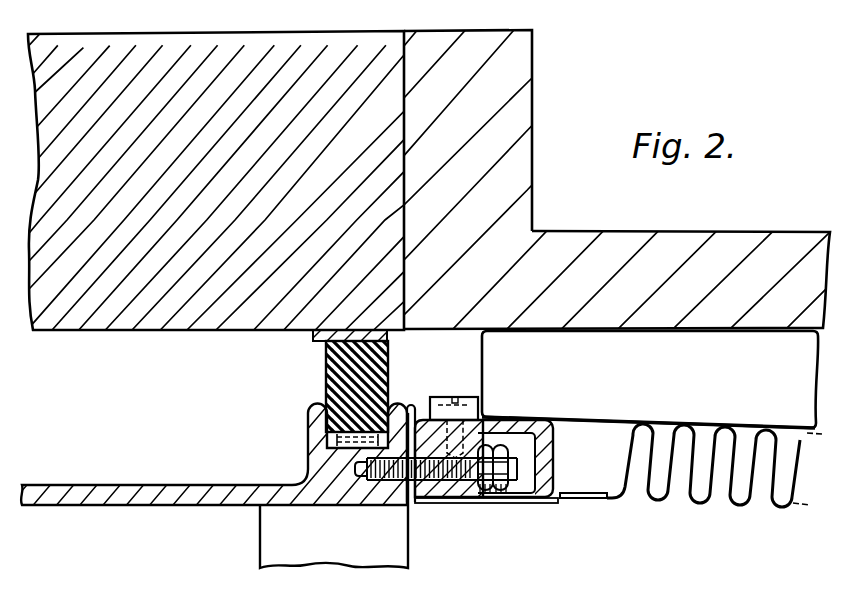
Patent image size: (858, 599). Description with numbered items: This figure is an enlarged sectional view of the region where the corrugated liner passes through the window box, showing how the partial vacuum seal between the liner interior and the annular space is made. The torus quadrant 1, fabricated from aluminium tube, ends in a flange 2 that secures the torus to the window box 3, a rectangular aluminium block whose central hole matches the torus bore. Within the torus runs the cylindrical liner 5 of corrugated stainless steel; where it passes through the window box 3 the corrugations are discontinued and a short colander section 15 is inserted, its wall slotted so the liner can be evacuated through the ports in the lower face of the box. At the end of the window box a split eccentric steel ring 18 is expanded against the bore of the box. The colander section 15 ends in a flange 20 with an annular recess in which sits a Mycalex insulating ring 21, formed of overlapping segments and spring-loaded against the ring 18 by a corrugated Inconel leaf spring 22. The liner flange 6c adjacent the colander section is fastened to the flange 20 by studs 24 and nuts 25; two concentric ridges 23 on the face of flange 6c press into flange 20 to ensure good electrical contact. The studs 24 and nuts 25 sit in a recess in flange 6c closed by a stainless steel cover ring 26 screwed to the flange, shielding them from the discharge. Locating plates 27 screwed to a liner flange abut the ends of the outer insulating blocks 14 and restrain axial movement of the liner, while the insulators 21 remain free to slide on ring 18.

The torus quadrant 1 is at (732, 250).
The flange 2 is at (510, 128).
The window box 3 is at (135, 312).
The cylindrical liner 5 is at (737, 500).
The flange of the liner 6c is at (472, 502).
The outer row of blocks 14 is at (641, 361).
The colander section 15 is at (150, 495).
The split eccentric steel ring 18 is at (313, 340).
The flange 20 is at (333, 468).
The Mycalex insulating ring 21 is at (326, 362).
The corrugated leaf spring 22 is at (327, 440).
The concentric ridges 23 is at (413, 453).
The studs 24 is at (380, 477).
The nuts 25 is at (498, 492).
The stainless steel cover ring 26 is at (548, 504).
The locating plates 27 is at (474, 386).